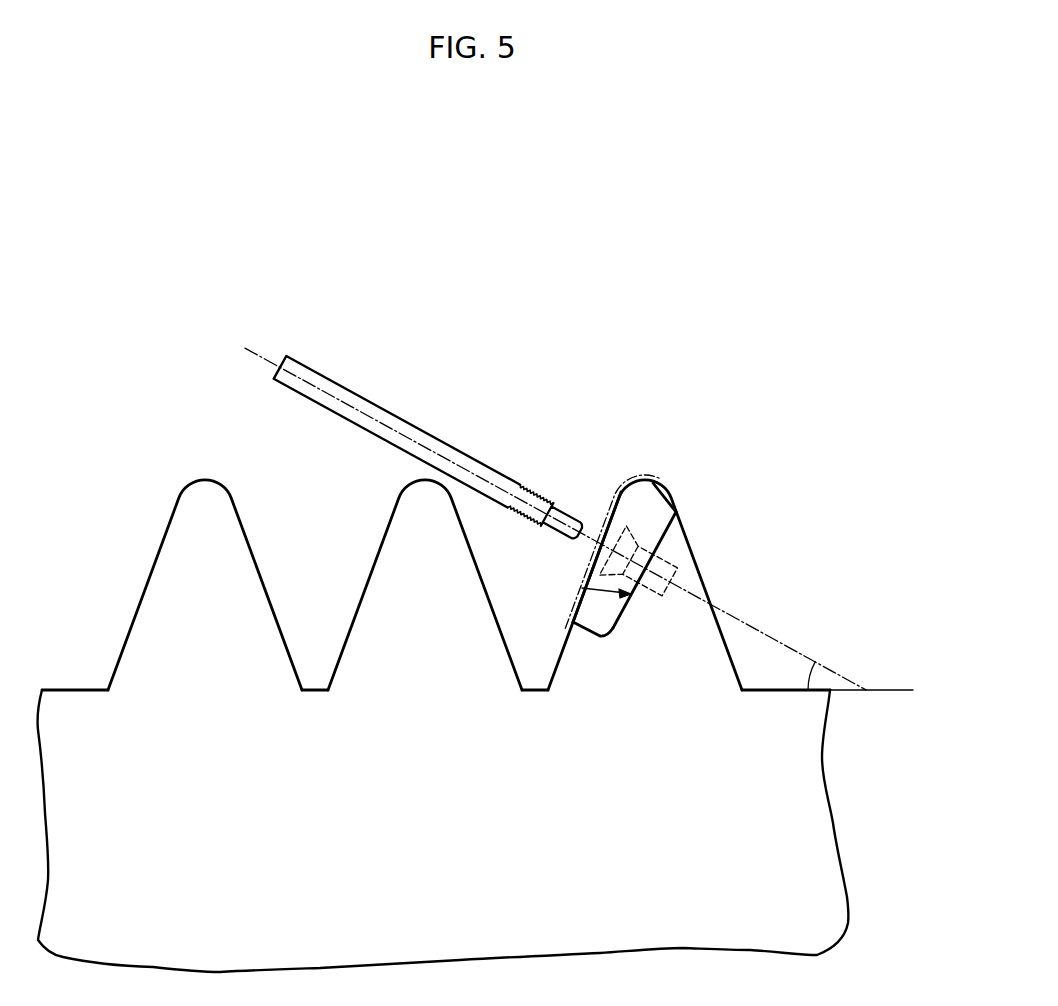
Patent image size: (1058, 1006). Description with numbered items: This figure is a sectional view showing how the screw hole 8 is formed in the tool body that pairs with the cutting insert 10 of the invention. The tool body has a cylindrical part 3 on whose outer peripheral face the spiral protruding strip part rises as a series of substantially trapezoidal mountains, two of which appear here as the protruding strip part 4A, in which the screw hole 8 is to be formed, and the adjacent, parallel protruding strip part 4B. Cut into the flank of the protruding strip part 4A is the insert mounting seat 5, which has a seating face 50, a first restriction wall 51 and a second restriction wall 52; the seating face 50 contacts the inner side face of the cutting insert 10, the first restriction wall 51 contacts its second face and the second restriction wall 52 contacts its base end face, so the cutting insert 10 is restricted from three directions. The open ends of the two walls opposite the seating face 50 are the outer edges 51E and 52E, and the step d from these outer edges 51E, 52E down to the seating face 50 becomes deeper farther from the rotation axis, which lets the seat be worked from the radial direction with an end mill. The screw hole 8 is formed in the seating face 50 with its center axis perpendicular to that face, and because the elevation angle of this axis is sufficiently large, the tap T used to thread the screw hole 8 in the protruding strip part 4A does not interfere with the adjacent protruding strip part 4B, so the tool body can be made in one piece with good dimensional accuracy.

The cylindrical part 3 is at (78, 690).
The protruding strip part 4A is at (561, 655).
The protruding strip part 4B is at (383, 540).
The insert mounting seat 5 is at (610, 616).
The first restriction wall 51 is at (612, 605).
The second restriction wall 52 is at (618, 633).
The outer edge 51E is at (581, 602).
The outer edge 52E is at (540, 605).
The screw hole 8 is at (673, 552).
The cutting insert 10 is at (633, 472).
The seating face 50 is at (667, 557).
The tap T is at (303, 360).
The step d is at (606, 600).